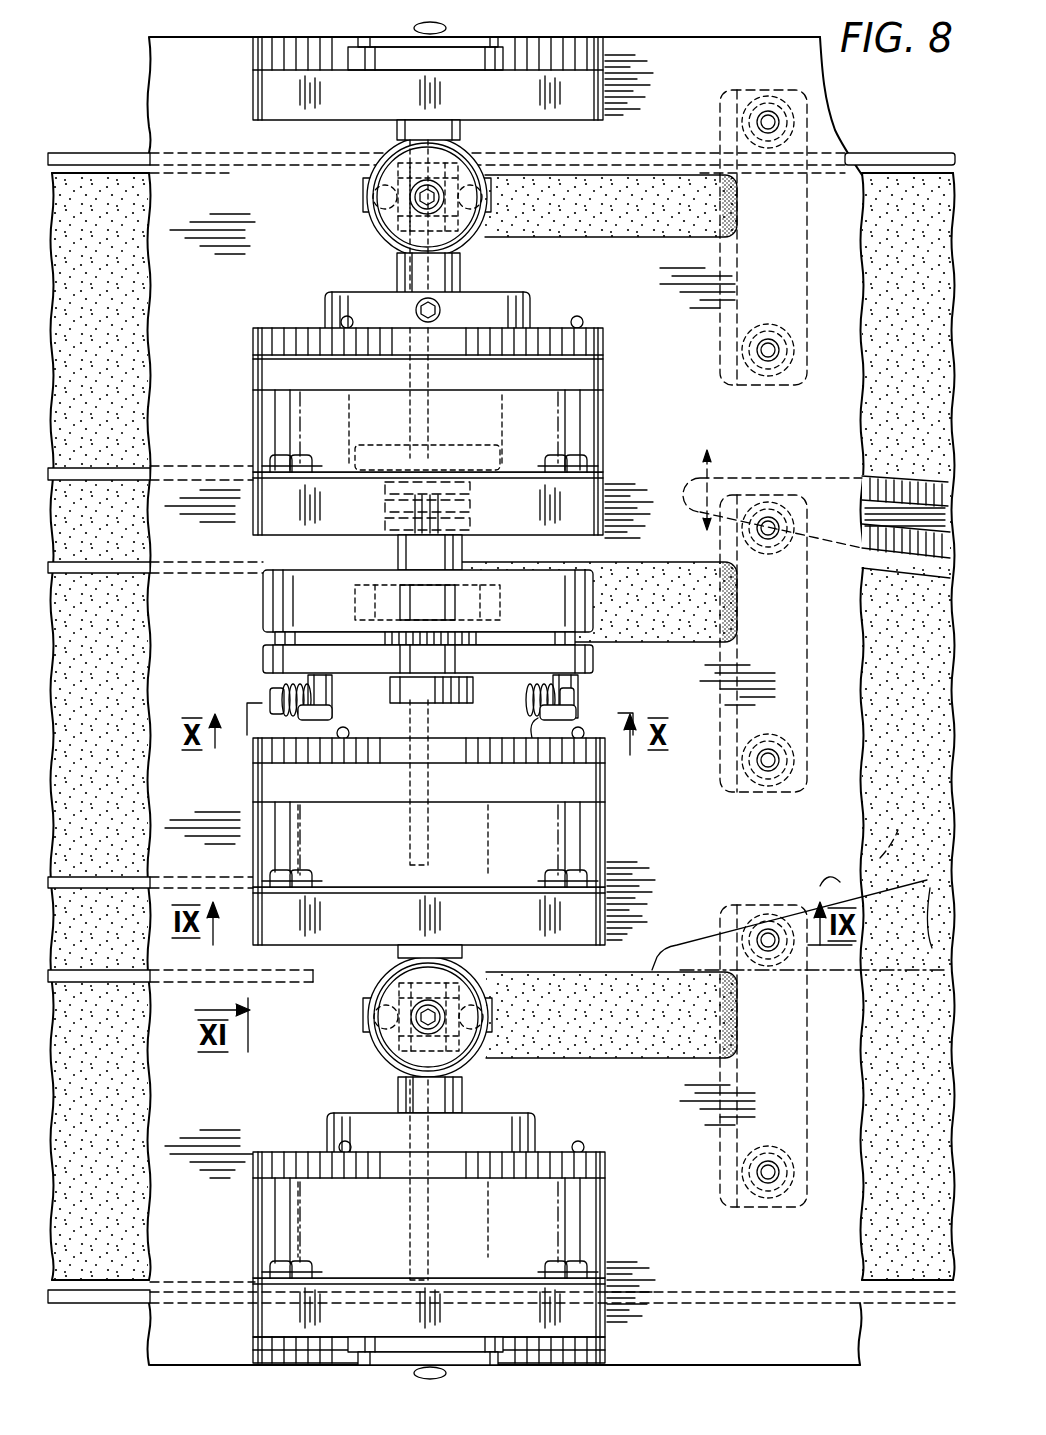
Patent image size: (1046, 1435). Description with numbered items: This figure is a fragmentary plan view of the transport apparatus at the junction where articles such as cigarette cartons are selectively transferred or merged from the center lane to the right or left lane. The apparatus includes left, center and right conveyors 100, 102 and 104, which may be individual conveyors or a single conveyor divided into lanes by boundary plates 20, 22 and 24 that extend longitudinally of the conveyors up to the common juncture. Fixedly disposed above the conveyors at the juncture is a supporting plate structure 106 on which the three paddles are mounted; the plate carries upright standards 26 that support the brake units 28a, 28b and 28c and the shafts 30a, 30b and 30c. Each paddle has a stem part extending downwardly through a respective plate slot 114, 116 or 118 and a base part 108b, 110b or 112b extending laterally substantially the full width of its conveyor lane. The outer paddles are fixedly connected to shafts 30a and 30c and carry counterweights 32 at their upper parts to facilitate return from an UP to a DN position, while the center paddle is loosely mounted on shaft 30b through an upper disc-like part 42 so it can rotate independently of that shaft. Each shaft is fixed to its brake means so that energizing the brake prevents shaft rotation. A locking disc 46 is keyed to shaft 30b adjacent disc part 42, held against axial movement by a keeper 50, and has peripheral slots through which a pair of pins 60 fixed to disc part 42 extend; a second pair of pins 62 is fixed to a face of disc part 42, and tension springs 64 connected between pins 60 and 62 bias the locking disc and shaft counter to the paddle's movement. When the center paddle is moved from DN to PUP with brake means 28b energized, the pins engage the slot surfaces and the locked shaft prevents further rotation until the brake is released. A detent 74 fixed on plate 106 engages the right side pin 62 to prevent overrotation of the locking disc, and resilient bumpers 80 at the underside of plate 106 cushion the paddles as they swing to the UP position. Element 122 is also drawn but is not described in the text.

The boundary plate 20 is at (96, 480).
The boundary plate 22 is at (94, 158).
The boundary plate 24 is at (94, 1303).
The upright standard 26 is at (262, 97).
The brake means 28a is at (612, 410).
The brake means 28b is at (614, 822).
The brake means 28c is at (614, 1192).
The shaft 30a is at (397, 274).
The shaft 30b is at (398, 553).
The shaft 30c is at (400, 1090).
The counterweight 32 is at (378, 228).
The disc-like part 42 is at (263, 596).
The locking disc 46 is at (263, 655).
The keeper 50 is at (431, 708).
The pin 60 is at (280, 692).
The pin 62 is at (322, 690).
The tension spring 64 is at (334, 715).
The detent 74 is at (536, 772).
The resilient bumper 80 is at (730, 220).
The left conveyor 100 is at (129, 329).
The center conveyor 102 is at (130, 700).
The right conveyor 104 is at (129, 1131).
The supporting plate structure 106 is at (251, 1107).
The base part 108b is at (445, 272).
The base part 110b is at (420, 830).
The base part 112b is at (420, 1230).
The plate slot 114 is at (596, 237).
The plate slot 116 is at (661, 642).
The plate slot 118 is at (646, 1058).
The latch member 122 is at (897, 478).